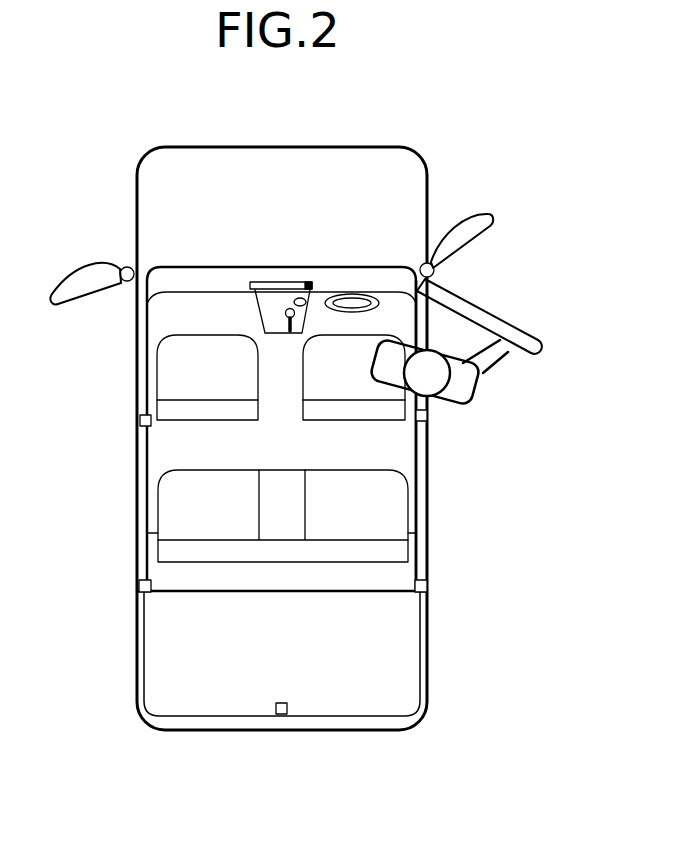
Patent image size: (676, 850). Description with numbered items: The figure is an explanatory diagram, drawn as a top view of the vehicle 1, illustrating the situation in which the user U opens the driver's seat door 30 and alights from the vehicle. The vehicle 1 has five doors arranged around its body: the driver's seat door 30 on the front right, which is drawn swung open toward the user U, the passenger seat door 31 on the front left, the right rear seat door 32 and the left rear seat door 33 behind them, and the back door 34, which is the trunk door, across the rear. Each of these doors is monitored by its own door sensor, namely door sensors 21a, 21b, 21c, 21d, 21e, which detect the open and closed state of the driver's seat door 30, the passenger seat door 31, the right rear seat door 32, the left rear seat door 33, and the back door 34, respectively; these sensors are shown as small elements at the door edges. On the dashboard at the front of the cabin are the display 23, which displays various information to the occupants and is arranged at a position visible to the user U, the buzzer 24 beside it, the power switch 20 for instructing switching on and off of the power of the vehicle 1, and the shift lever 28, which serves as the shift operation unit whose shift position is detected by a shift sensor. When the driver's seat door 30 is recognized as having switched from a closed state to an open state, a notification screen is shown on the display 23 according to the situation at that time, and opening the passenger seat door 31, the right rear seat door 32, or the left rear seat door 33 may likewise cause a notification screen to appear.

The vehicle 1 is at (278, 147).
The power switch 20 is at (306, 299).
The door sensor 21a is at (427, 416).
The door sensor 21b is at (139, 421).
The door sensor 21c is at (428, 590).
The door sensor 21d is at (139, 590).
The door sensor 21e is at (282, 714).
The display 23 is at (262, 282).
The buzzer 24 is at (312, 282).
The shift lever 28 is at (285, 316).
The driver's seat door 30 is at (490, 335).
The passenger seat door 31 is at (137, 330).
The right rear seat door 32 is at (428, 510).
The left rear seat door 33 is at (157, 492).
The back door 34 is at (387, 695).
The user U is at (482, 403).